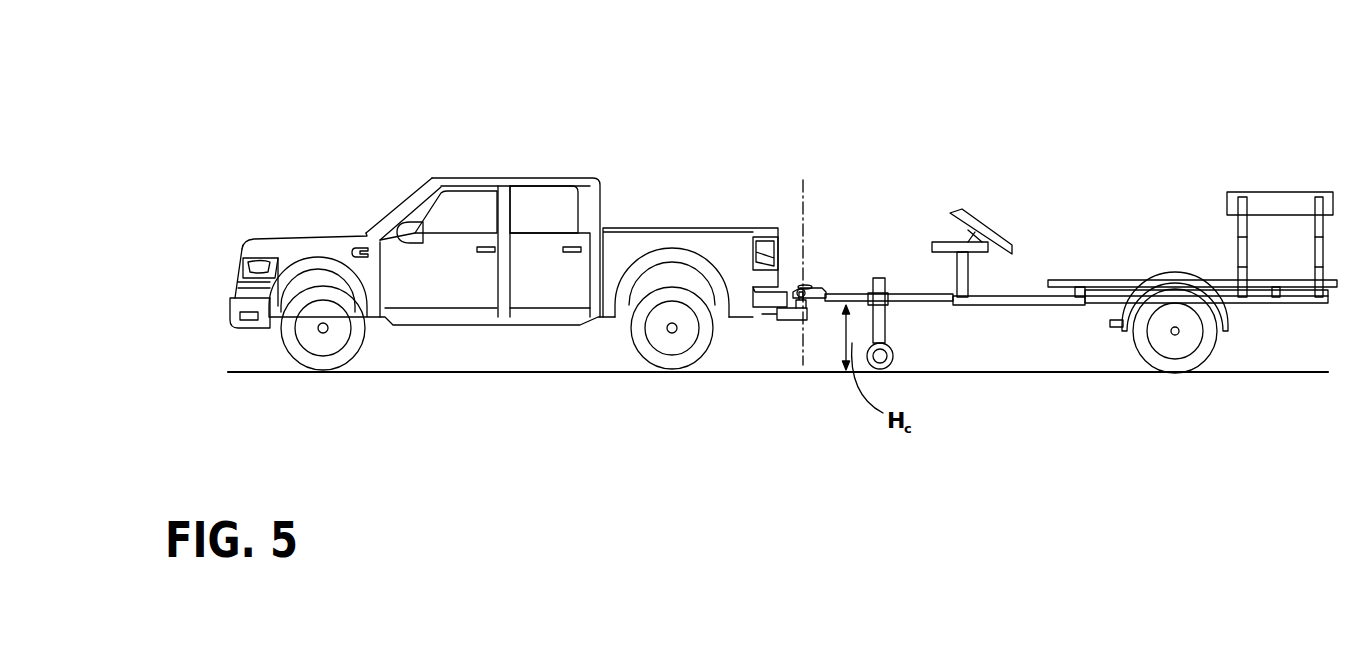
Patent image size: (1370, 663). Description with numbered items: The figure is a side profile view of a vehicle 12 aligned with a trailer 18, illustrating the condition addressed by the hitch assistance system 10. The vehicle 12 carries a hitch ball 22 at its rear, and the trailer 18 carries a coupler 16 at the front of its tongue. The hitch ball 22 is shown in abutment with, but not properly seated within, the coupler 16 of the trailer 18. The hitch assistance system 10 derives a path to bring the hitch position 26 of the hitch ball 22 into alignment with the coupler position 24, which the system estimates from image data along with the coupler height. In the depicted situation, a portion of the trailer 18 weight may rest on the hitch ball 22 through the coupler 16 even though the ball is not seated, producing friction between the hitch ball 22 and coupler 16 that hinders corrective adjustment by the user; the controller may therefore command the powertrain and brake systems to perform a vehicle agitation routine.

The hitch assistance system 10 is at (356, 122).
The vehicle 12 is at (507, 170).
The coupler 16 is at (808, 288).
The coupler position 24 is at (809, 291).
The hitch ball 22 is at (797, 299).
The hitch position 26 is at (801, 298).
The trailer 18 is at (1107, 268).